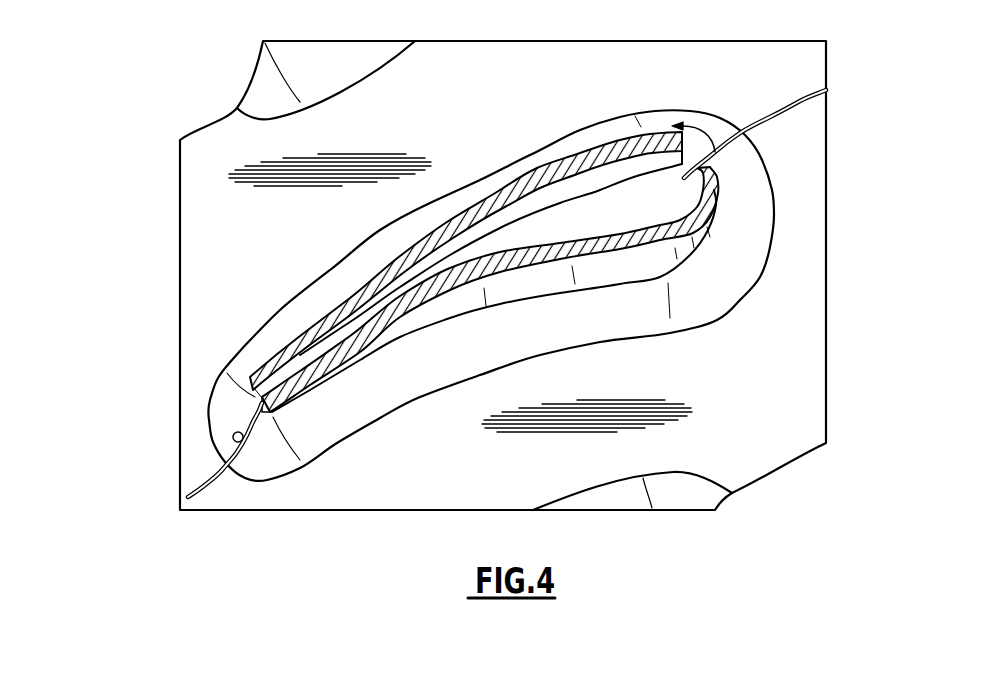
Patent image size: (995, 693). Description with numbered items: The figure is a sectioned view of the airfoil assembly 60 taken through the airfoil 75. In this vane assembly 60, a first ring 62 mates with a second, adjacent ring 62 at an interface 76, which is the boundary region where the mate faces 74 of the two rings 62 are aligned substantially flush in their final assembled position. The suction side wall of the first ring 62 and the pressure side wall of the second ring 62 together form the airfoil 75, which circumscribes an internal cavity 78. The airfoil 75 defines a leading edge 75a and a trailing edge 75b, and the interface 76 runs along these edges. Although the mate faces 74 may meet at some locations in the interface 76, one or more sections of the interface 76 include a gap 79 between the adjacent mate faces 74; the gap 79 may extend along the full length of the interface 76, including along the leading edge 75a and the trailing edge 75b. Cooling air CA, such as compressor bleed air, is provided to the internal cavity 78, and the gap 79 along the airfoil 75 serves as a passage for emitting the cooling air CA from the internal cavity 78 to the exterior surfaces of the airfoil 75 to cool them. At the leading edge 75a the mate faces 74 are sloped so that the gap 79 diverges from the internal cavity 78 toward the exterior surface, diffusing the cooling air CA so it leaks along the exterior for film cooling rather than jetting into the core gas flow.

The vane assembly 60 is at (162, 375).
The ring 62 is at (805, 165).
The mate face 74 is at (183, 500).
The airfoil 75 is at (536, 157).
The leading edge 75a is at (700, 103).
The trailing edge 75b is at (308, 418).
The interface 76 is at (773, 90).
The internal cavity 78 is at (684, 171).
The gap 79 is at (697, 142).
The cooling air CA is at (740, 177).